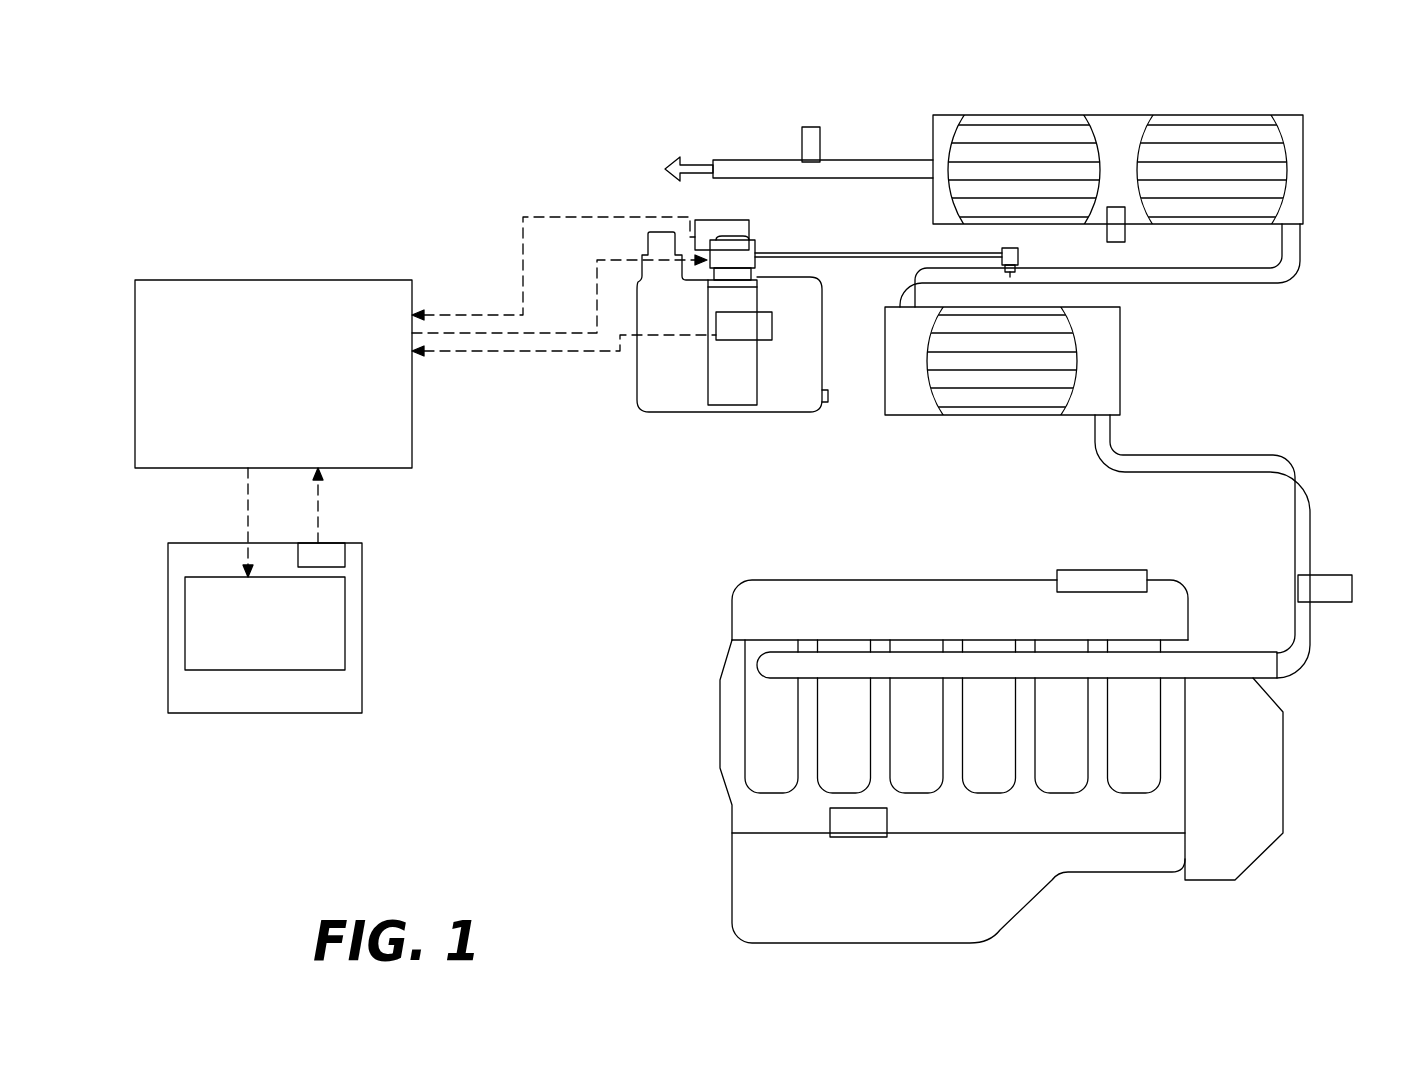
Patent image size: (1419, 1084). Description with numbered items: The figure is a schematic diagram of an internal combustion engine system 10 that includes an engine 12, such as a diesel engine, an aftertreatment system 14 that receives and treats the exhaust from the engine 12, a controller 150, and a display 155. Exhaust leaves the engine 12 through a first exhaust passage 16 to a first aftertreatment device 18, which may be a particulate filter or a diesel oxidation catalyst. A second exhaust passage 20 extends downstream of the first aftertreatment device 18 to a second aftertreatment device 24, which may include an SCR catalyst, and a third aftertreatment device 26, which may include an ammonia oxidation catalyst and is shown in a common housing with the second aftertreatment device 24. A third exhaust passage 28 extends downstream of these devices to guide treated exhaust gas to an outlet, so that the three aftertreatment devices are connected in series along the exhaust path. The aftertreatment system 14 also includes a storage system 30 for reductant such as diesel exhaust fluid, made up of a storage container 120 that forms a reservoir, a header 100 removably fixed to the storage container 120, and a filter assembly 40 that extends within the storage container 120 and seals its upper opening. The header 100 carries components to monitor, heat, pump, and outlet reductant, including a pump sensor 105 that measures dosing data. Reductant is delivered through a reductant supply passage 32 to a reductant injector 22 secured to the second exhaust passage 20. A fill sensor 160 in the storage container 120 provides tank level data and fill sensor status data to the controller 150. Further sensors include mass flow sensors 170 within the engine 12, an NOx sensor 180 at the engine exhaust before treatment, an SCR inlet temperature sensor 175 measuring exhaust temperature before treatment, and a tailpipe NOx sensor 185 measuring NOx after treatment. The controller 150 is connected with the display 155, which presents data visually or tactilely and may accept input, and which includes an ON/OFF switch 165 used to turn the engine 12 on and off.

The internal combustion engine system 10 is at (648, 82).
The engine 12 is at (727, 757).
The aftertreatment system 14 is at (1325, 286).
The first exhaust passage 16 is at (1302, 518).
The first aftertreatment device 18 is at (1055, 327).
The second exhaust passage 20 is at (1215, 283).
The reductant injector 22 is at (1014, 254).
The second aftertreatment device 24 is at (1202, 147).
The third aftertreatment device 26 is at (1000, 147).
The third exhaust passage 28 is at (730, 172).
The storage system 30 is at (625, 246).
The reductant supply passage 32 is at (850, 252).
The filter assembly 40 is at (700, 366).
The header 100 is at (716, 214).
The pump sensor 105 is at (690, 238).
The storage container 120 is at (647, 353).
The controller 150 is at (354, 385).
The display 155 is at (320, 637).
The fill sensor 160 is at (730, 332).
The ON/OFF switch 165 is at (340, 553).
The mass flow sensors 170 is at (873, 827).
The SCR inlet temperature sensor 175 is at (1116, 242).
The NOx sensor 180 is at (1345, 602).
The tailpipe NOx sensor 185 is at (808, 130).